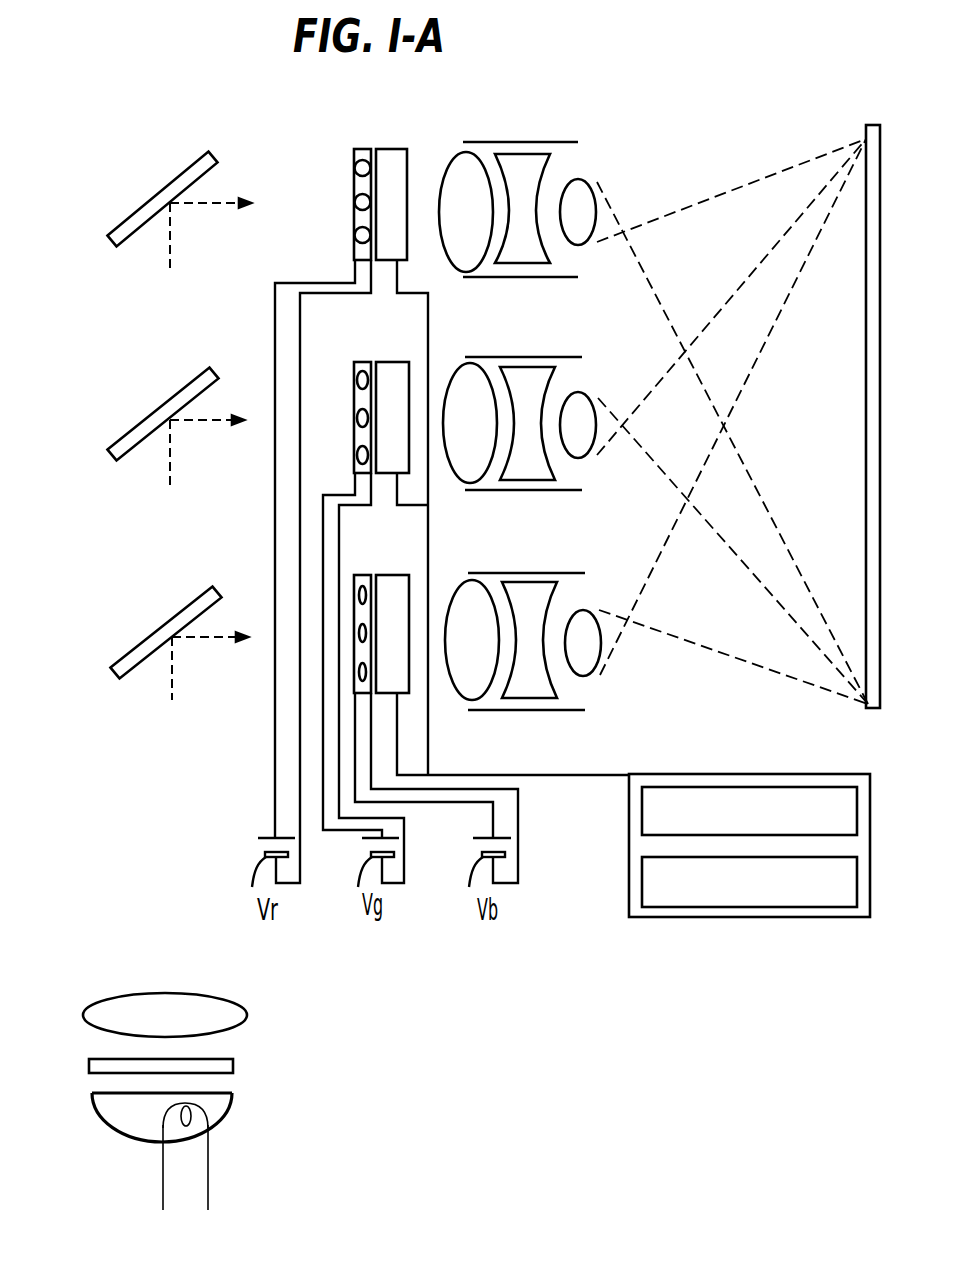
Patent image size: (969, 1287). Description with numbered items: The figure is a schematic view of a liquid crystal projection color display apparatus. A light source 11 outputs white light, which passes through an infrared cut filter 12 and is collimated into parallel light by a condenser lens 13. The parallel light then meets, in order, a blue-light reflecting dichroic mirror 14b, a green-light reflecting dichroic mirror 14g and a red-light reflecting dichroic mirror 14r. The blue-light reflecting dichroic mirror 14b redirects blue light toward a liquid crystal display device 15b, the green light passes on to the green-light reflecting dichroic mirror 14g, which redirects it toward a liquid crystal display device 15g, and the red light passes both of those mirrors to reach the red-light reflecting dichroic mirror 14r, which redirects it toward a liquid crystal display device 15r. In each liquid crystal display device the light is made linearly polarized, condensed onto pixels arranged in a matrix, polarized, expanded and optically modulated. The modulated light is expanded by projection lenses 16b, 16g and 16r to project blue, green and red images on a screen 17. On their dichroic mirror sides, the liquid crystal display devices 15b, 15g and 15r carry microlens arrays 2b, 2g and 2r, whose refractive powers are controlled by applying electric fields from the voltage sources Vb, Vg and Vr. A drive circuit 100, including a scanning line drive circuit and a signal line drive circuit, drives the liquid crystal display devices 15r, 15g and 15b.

The light source 11 is at (112, 1123).
The infrared cut filter 12 is at (235, 1065).
The condenser lens 13 is at (245, 1012).
The red-light reflecting dichroic mirror 14r is at (160, 193).
The green-light reflecting dichroic mirror 14g is at (138, 425).
The blue-light reflecting dichroic mirror 14b is at (142, 640).
The microlens array 2r is at (354, 178).
The microlens array 2g is at (354, 416).
The microlens array 2b is at (354, 645).
The liquid crystal display device 15r is at (392, 149).
The liquid crystal display device 15g is at (376, 362).
The liquid crystal display device 15b is at (377, 575).
The projection lens 16r is at (508, 142).
The projection lens 16g is at (497, 357).
The projection lens 16b is at (496, 573).
The screen 17 is at (864, 172).
The drive circuit 100 is at (755, 917).